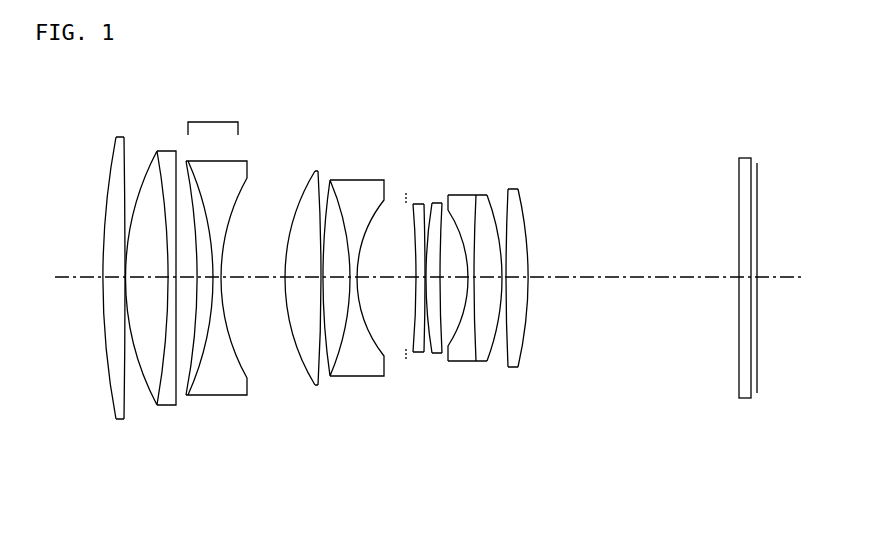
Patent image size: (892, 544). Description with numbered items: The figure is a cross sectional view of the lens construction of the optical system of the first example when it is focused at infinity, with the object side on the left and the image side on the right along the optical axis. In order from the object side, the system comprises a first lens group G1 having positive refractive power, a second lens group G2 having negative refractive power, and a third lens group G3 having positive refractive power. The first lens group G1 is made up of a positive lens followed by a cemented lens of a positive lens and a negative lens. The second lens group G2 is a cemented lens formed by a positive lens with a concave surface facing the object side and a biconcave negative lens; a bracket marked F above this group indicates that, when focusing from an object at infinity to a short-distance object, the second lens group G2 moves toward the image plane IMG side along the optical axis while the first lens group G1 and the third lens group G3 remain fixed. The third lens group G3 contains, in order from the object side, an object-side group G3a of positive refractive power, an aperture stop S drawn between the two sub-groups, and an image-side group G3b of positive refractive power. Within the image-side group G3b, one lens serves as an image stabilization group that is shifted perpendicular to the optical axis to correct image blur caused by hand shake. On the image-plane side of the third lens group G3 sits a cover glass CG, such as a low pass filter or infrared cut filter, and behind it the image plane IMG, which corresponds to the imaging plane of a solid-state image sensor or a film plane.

The first lens group G1 is at (103, 437).
The second lens group G2 is at (188, 437).
The third lens group G3 is at (408, 304).
The object-side group G3a is at (288, 400).
The image-side group G3b is at (472, 315).
The focusing movement indicator F is at (213, 122).
The aperture stop S is at (406, 187).
The cover glass CG is at (745, 405).
The image plane IMG is at (758, 152).